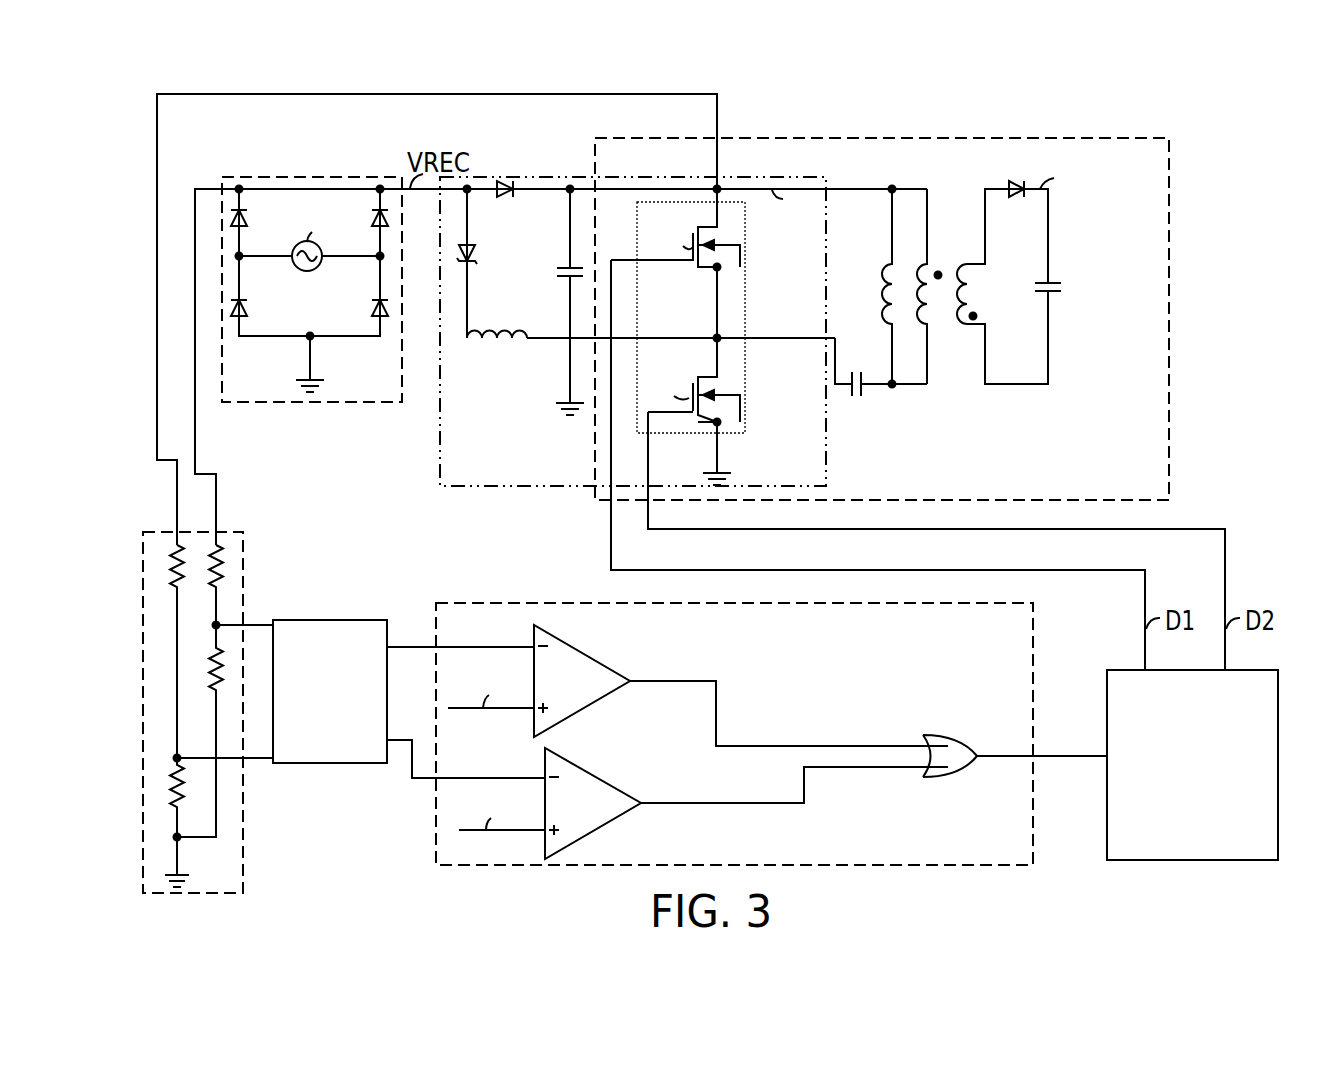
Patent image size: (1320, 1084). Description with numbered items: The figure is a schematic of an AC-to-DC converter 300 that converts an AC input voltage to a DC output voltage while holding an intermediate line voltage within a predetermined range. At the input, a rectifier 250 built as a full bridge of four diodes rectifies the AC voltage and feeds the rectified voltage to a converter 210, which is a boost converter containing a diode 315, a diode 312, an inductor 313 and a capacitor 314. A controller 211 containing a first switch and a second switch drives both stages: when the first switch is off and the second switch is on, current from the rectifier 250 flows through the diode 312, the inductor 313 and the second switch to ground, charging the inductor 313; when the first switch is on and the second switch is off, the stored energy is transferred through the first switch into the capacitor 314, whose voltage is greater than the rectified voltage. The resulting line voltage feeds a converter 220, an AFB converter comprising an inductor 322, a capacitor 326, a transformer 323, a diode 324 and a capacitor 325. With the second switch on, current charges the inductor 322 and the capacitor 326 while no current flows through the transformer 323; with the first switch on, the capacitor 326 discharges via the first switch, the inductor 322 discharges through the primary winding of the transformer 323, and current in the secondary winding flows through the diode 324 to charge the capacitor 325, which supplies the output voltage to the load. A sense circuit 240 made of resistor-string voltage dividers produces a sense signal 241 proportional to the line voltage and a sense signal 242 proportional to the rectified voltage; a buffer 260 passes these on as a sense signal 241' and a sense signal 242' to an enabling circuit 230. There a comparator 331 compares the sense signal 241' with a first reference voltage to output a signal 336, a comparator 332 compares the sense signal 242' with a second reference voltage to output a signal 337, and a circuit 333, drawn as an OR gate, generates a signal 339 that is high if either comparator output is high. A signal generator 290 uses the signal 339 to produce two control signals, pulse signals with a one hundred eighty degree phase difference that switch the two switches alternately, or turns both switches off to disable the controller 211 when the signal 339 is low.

The AC-to-DC converter 300 is at (1044, 102).
The converter 210 is at (637, 318).
The controller 211 is at (746, 292).
The converter 220 is at (882, 305).
The enabling circuit 230 is at (734, 719).
The sense circuit 240 is at (145, 688).
The sense signal 241 is at (233, 779).
The sense signal 242 is at (251, 606).
The sense signal 241' is at (448, 773).
The sense signal 242' is at (460, 622).
The rectifier 250 is at (278, 177).
The buffer 260 is at (316, 620).
The signal generator 290 is at (1134, 670).
The diode 312 is at (474, 263).
The inductor 313 is at (651, 353).
The capacitor 314 is at (565, 279).
The diode 315 is at (518, 208).
The inductor 322 is at (889, 282).
The transformer 323 is at (937, 270).
The diode 324 is at (1019, 197).
The capacitor 325 is at (1040, 292).
The capacitor 326 is at (881, 389).
The comparator 331 is at (588, 772).
The comparator 332 is at (581, 651).
The circuit 333 is at (956, 739).
The signal 336 is at (748, 803).
The signal 337 is at (747, 746).
The signal 339 is at (1049, 757).